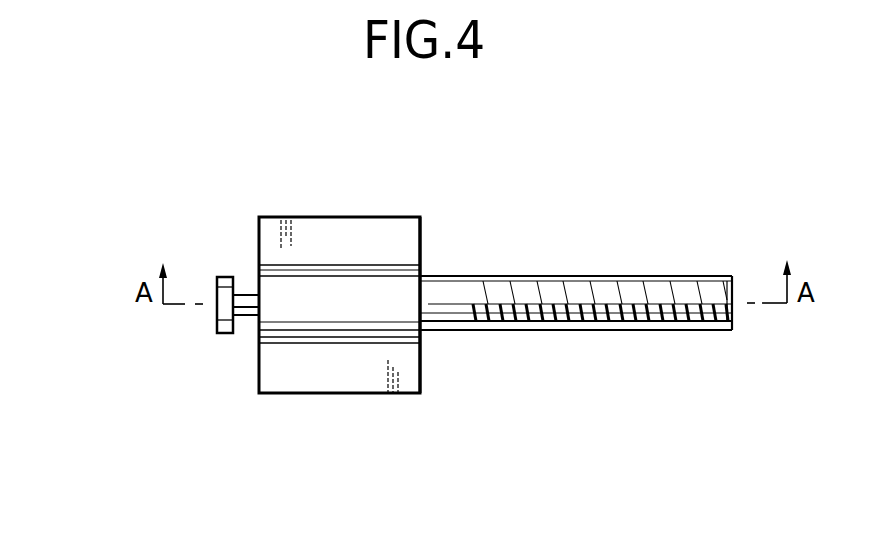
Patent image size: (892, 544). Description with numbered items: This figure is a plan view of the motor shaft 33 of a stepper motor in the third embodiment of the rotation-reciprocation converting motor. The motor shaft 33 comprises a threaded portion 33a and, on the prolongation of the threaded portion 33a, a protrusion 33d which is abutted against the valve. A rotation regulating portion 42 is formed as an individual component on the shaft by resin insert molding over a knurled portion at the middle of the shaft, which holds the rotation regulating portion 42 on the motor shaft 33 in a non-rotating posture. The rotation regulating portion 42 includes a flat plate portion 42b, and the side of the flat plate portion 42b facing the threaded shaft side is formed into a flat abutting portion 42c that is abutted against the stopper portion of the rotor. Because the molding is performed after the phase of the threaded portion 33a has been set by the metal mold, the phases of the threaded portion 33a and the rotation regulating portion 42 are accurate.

The motor shaft 33 is at (570, 182).
The threaded portion 33a is at (628, 275).
The protrusion 33d is at (217, 322).
The rotation regulating portion 42 is at (342, 280).
The flat plate portion 42b is at (344, 394).
The abutting portion 42c is at (421, 242).